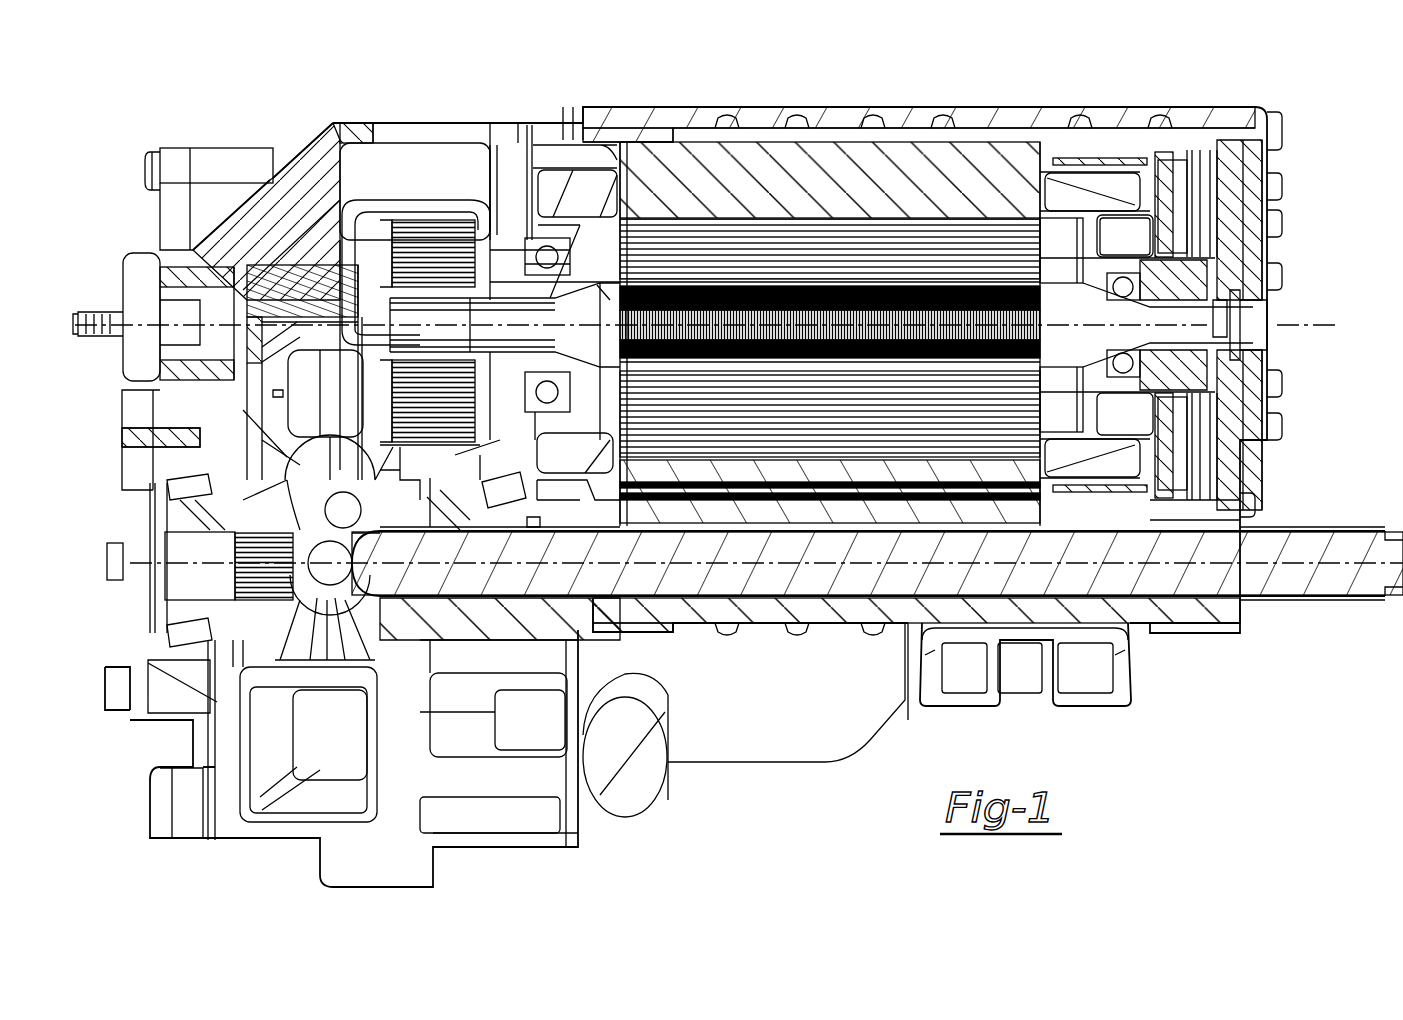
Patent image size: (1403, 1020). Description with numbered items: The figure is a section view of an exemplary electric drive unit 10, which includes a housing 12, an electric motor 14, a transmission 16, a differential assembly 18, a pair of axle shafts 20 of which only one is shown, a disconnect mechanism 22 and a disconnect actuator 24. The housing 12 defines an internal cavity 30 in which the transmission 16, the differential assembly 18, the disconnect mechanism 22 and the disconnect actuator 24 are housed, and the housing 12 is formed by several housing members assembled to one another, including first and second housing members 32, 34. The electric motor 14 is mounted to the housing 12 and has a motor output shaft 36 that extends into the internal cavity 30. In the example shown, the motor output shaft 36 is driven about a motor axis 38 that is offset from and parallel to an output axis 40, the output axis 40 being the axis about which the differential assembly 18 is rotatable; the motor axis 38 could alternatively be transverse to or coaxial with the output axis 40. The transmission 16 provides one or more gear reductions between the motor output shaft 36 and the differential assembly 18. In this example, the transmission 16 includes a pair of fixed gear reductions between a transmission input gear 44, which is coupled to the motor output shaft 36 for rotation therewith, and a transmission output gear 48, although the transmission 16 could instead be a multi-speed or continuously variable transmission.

The electric drive unit 10 is at (1072, 86).
The housing 12 is at (570, 130).
The electric motor 14 is at (792, 163).
The transmission 16 is at (384, 386).
The differential assembly 18 is at (262, 690).
The axle shafts 20 is at (1362, 580).
The disconnect mechanism 22 is at (425, 702).
The disconnect actuator 24 is at (450, 750).
The internal cavity 30 is at (415, 165).
The first housing member 32 is at (240, 225).
The second housing member 34 is at (460, 125).
The motor output shaft 36 is at (500, 250).
The motor axis 38 is at (1307, 320).
The output axis 40 is at (1337, 545).
The transmission input gear 44 is at (538, 420).
The transmission output gear 48 is at (250, 325).